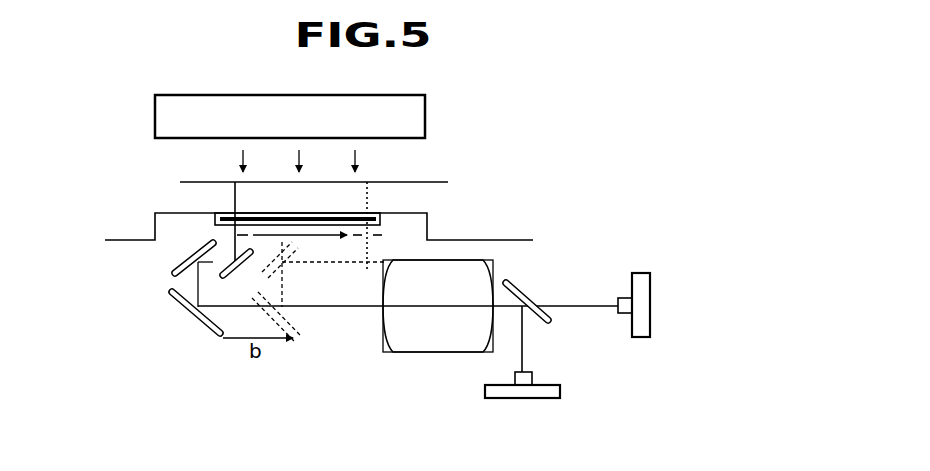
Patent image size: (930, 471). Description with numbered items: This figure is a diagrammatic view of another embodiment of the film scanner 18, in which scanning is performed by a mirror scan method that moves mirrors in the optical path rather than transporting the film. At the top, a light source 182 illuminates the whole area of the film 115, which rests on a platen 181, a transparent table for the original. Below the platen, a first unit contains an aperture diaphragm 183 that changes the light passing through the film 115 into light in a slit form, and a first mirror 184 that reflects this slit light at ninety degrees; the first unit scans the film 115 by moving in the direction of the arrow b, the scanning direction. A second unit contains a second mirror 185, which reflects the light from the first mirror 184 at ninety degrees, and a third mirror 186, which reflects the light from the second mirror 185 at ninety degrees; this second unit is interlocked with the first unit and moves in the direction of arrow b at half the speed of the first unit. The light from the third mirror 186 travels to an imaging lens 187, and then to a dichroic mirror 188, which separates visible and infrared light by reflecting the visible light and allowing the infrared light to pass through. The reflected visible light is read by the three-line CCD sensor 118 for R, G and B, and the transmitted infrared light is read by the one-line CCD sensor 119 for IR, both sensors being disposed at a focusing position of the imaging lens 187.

The scanner 18 is at (573, 118).
The film 115 is at (400, 181).
The 3-line CCD sensor 118 is at (523, 392).
The 1-line CCD sensor 119 is at (645, 300).
The platen 181 is at (373, 212).
The light source 182 is at (425, 121).
The aperture diaphragm 183 is at (228, 239).
The first mirror 184 is at (233, 276).
The second mirror 185 is at (180, 262).
The third mirror 186 is at (183, 308).
The imaging lens 187 is at (427, 340).
The dichroic mirror 188 is at (530, 292).